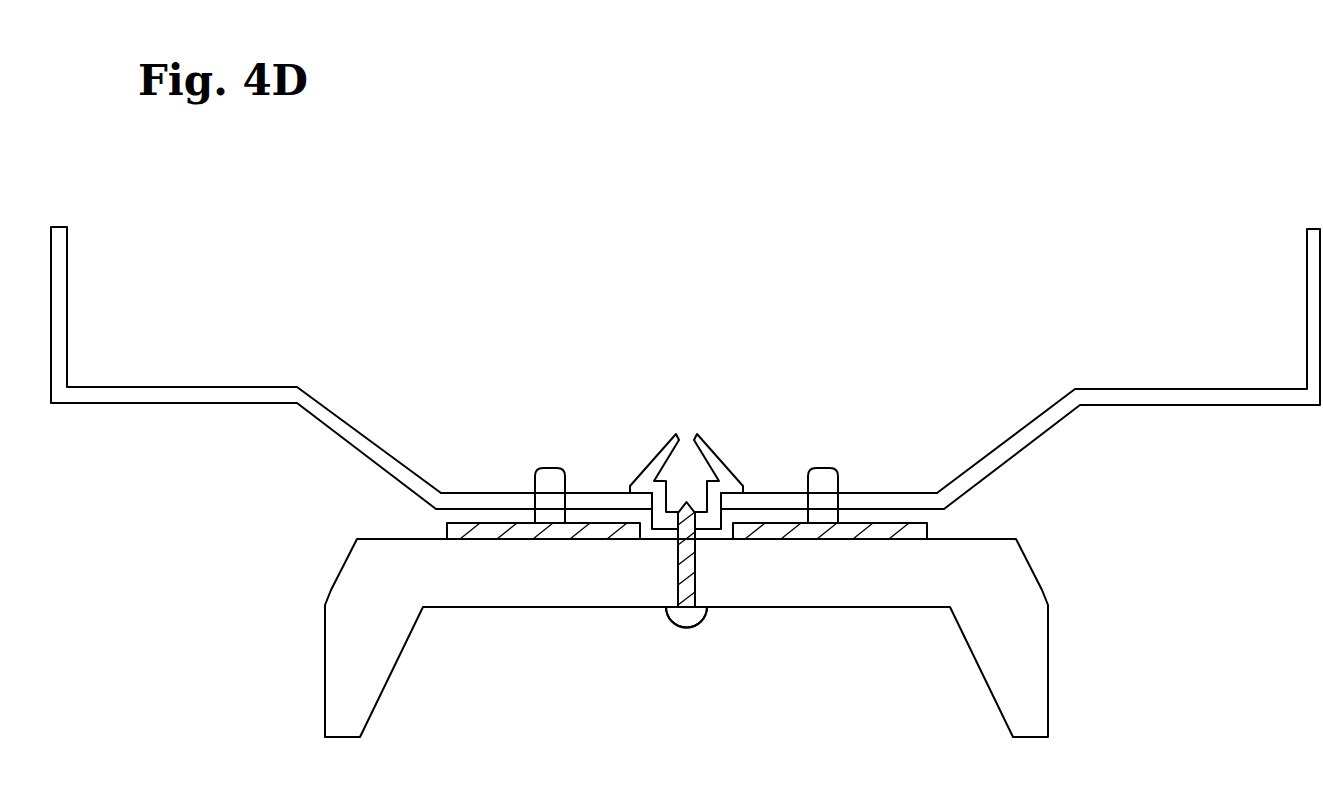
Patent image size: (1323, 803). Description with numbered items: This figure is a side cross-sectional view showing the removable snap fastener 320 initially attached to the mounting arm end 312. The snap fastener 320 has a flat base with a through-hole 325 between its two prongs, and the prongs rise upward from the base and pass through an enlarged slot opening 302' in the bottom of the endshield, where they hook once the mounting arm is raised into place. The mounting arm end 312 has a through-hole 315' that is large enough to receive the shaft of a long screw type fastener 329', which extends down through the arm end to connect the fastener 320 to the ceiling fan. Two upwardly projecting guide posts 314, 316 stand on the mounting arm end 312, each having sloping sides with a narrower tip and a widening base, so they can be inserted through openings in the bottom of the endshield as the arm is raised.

The snap fastener 320 is at (68, 313).
The through-hole 325 is at (940, 509).
The enlarged slot opening 302' is at (640, 448).
The through-hole 315' is at (619, 598).
The long screw type fastener 329' is at (754, 644).
The guide post 314 is at (548, 467).
The guide post 316 is at (825, 467).
The mounting arm end 312 is at (378, 572).